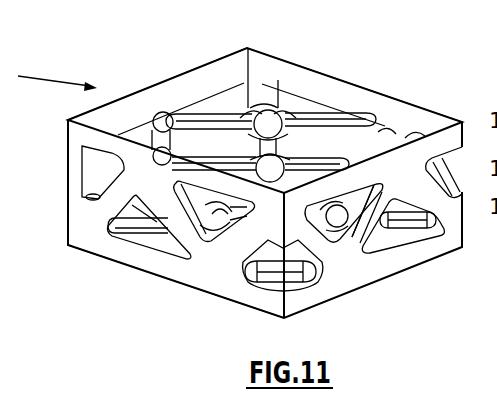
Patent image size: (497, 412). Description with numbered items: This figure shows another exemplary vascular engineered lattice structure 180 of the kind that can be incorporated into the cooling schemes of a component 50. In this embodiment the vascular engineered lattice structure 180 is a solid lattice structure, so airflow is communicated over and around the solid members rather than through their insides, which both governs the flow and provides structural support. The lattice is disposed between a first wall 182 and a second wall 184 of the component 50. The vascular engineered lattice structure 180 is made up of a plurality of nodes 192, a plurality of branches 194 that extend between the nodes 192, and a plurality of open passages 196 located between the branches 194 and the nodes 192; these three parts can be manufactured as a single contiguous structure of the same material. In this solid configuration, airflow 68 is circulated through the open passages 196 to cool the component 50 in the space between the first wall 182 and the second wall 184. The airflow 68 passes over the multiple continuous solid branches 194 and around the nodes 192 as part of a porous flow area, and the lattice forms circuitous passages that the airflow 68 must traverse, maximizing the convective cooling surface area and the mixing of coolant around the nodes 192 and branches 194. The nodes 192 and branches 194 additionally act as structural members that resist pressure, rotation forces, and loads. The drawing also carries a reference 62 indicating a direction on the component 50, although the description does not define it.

The component 50 is at (391, 48).
The load direction 62 is at (41, 78).
The airflow 68 is at (234, 134).
The vascular engineered lattice structure 180 is at (243, 84).
The first wall 182 is at (143, 100).
The second wall 184 is at (137, 268).
The nodes 192 is at (309, 103).
The branches 194 is at (263, 110).
The open passages 196 is at (353, 180).